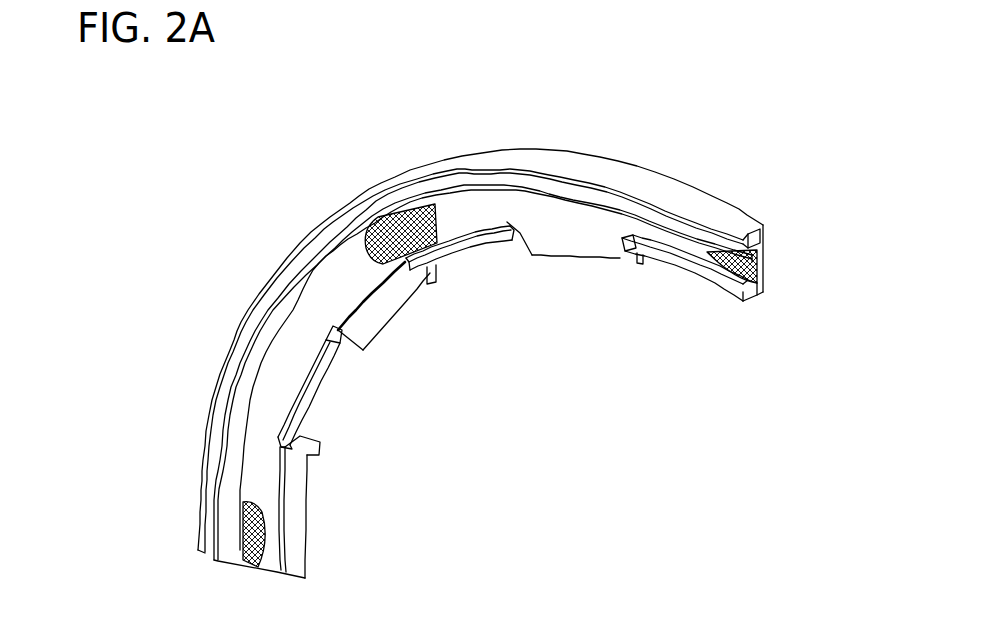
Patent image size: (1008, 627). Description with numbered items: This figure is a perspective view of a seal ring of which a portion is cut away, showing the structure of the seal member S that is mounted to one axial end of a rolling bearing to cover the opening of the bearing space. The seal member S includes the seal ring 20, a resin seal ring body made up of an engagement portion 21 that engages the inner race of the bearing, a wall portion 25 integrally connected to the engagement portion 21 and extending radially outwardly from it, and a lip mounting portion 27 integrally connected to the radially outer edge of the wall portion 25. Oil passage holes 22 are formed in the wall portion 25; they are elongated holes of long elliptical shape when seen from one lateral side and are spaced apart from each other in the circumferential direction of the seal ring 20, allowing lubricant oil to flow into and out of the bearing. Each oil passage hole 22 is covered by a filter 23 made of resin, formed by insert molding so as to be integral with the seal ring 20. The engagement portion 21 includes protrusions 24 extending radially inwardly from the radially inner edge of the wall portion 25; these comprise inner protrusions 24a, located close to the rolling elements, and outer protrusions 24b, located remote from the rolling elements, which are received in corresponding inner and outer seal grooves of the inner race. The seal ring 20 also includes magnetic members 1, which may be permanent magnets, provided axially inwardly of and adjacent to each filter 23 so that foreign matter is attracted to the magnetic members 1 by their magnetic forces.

The seal member S is at (731, 196).
The seal ring 20 is at (343, 298).
The engagement portion 21 is at (767, 282).
The oil passage hole 22 is at (398, 208).
The filter 23 is at (760, 257).
The protrusion 24 is at (603, 352).
The inner protrusion 24a is at (450, 248).
The outer protrusion 24b is at (565, 245).
The wall portion 25 is at (556, 222).
The lip mounting portion 27 is at (450, 185).
The magnetic member 1 is at (401, 262).